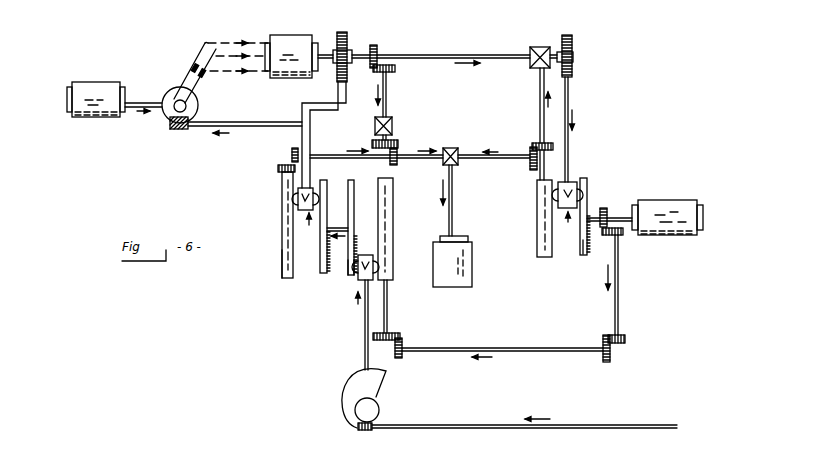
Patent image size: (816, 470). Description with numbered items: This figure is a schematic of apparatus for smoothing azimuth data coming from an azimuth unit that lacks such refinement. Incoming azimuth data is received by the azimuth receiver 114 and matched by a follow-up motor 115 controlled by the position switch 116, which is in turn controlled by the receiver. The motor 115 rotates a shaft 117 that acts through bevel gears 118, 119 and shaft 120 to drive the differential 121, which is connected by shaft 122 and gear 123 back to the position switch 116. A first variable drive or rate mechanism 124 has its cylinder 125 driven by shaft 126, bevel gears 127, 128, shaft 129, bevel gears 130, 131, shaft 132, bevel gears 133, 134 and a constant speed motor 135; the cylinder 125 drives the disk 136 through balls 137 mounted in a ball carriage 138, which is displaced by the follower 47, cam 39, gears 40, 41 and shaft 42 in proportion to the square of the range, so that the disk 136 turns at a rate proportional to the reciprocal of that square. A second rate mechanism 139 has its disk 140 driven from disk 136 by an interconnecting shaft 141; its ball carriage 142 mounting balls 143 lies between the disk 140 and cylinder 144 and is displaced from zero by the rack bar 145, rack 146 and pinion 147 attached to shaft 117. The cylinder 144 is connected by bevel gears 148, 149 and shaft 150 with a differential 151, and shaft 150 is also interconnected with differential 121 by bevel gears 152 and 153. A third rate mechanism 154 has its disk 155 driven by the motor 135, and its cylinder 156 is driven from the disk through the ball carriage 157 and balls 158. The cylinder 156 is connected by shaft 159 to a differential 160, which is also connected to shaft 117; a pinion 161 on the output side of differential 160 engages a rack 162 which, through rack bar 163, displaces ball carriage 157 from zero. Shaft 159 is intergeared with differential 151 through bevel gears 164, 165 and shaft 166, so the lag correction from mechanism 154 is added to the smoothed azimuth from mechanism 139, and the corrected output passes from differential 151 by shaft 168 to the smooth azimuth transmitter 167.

The cam 39 is at (386, 384).
The gear 40 is at (380, 412).
The gear 41 is at (366, 431).
The shaft 42 is at (464, 424).
The follower 47 is at (363, 341).
The azimuth receiver 114 is at (100, 87).
The follow-up motor 115 is at (289, 36).
The position switch 116 is at (197, 96).
The shaft 117 is at (488, 54).
The bevel gear 118 is at (380, 56).
The bevel gear 119 is at (396, 69).
The shaft 120 is at (389, 102).
The differential 121 is at (393, 126).
The shaft 122 is at (247, 124).
The gear 123 is at (177, 128).
The variable drive or rate mechanism 124 is at (365, 252).
The cylinder 125 is at (392, 233).
The shaft 126 is at (388, 312).
The bevel gear 127 is at (396, 333).
The bevel gear 128 is at (403, 343).
The shaft 129 is at (506, 346).
The bevel gear 130 is at (604, 360).
The bevel gear 131 is at (626, 339).
The shaft 132 is at (620, 303).
The bevel gear 133 is at (620, 235).
The bevel gear 134 is at (603, 208).
The constant speed motor 135 is at (688, 235).
The disk 136 is at (353, 262).
The balls 137 is at (354, 277).
The ball carriage 138 is at (344, 308).
The second variable drive or rate mechanism 139 is at (308, 225).
The disk 140 is at (326, 275).
The shaft 141 is at (337, 226).
The ball carriage 142 is at (312, 188).
The balls 143 is at (297, 206).
The cylinder 144 is at (282, 262).
The rack bar 145 is at (321, 102).
The rack 146 is at (345, 32).
The pinion 147 is at (351, 50).
The bevel gear 148 is at (278, 169).
The bevel gear 149 is at (290, 151).
The shaft 150 is at (333, 147).
The differential 151 is at (452, 148).
The bevel gear 152 is at (398, 166).
The bevel gear 153 is at (398, 144).
The third rate mechanism 154 is at (568, 224).
The disk 155 is at (583, 253).
The cylinder 156 is at (537, 222).
The ball carriage 157 is at (570, 181).
The balls 158 is at (588, 185).
The shaft 159 is at (540, 83).
The differential 160 is at (541, 47).
The pinion 161 is at (573, 57).
The rack 162 is at (572, 42).
The rack bar 163 is at (570, 106).
The bevel gear 164 is at (535, 143).
The bevel gear 165 is at (530, 153).
The shaft 166 is at (510, 160).
The smooth azimuth transmitter 167 is at (472, 274).
The shaft 168 is at (456, 218).